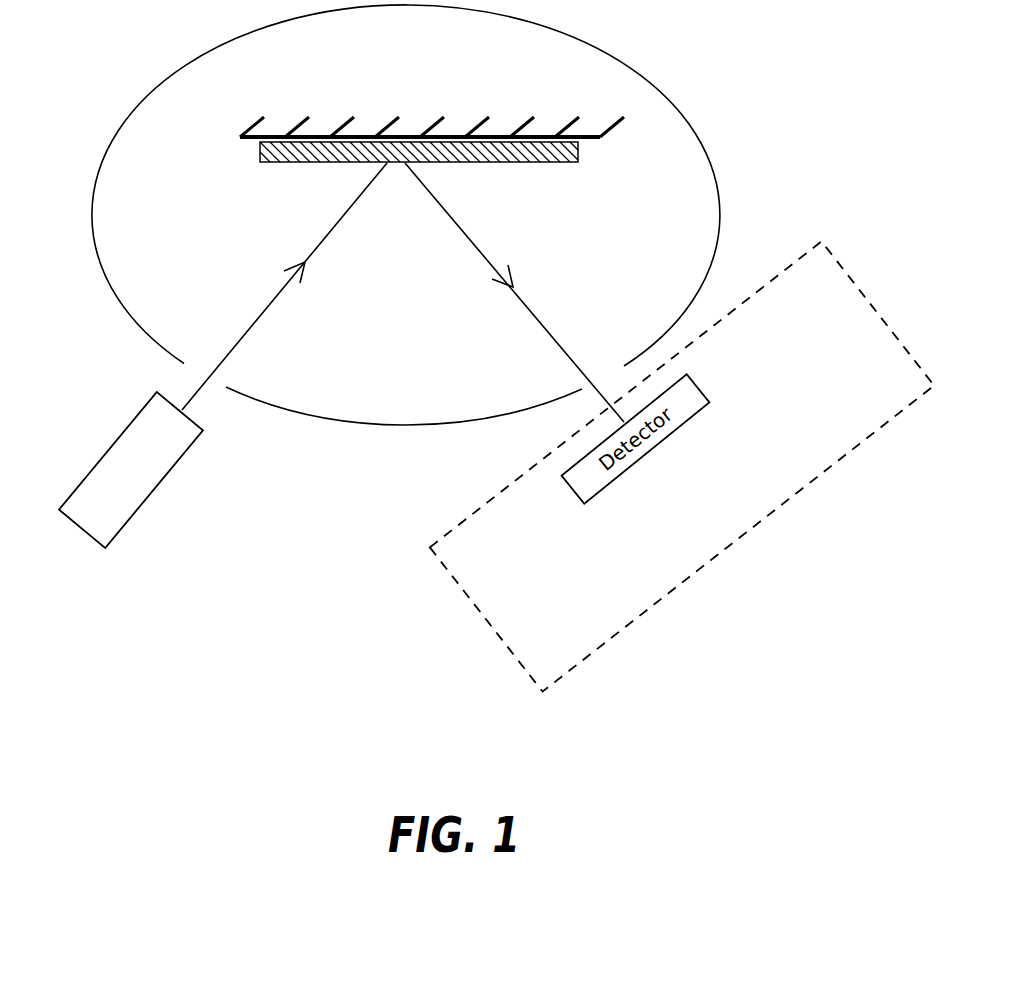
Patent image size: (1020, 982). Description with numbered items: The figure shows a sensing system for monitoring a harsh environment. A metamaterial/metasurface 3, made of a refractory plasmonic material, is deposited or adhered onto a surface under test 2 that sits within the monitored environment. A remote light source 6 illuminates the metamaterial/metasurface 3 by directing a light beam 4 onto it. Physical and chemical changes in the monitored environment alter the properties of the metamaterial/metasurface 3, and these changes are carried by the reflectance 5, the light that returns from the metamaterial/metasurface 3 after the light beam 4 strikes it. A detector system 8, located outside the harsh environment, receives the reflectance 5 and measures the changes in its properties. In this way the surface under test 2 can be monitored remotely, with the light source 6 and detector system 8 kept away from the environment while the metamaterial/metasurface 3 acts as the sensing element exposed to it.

The surface under test 2 is at (480, 117).
The metamaterial/metasurface 3 is at (270, 168).
The light beam 4 is at (275, 278).
The reflectance 5 is at (498, 255).
The remote light source 6 is at (92, 460).
The detector system 8 is at (843, 260).